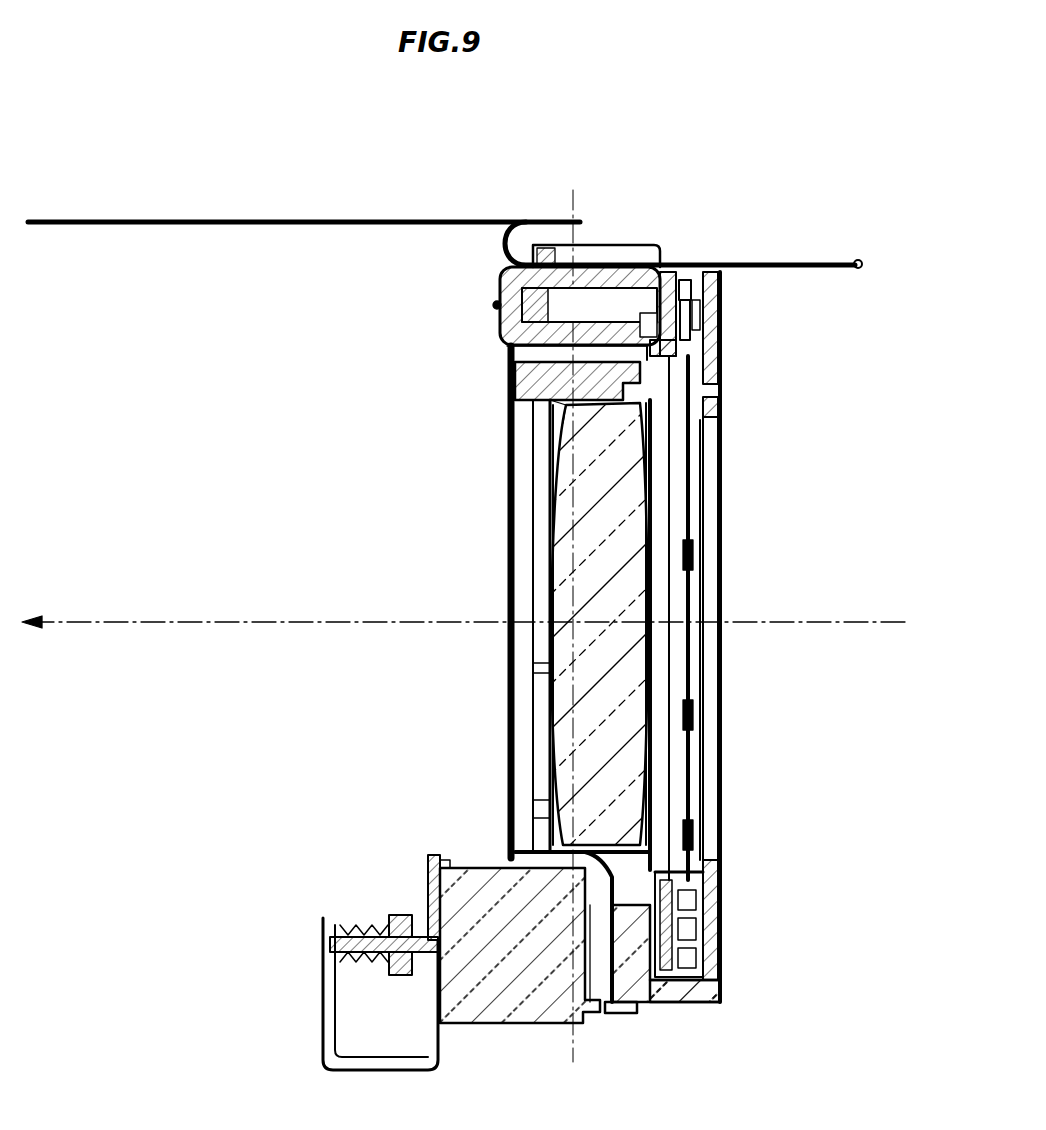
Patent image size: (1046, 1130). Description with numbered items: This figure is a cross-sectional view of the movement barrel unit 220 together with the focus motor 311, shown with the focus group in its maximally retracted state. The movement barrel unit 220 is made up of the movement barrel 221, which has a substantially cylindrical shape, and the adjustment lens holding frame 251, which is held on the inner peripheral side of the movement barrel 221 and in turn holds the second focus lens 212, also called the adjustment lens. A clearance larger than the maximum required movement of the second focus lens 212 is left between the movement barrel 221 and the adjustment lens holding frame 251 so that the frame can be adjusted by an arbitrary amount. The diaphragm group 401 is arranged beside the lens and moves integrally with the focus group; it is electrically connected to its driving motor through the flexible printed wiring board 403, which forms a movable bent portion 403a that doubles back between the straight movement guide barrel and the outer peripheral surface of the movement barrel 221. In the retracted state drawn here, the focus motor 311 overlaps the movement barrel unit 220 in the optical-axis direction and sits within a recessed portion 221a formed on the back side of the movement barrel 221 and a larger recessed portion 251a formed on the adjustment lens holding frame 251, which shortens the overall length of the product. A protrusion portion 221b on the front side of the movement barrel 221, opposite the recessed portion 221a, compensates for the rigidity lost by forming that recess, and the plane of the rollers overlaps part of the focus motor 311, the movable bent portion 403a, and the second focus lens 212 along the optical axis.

The movement barrel unit 220 is at (622, 156).
The flexible printed wiring board 403 is at (243, 220).
The movable bent portion 403a is at (512, 237).
The movement barrel 221 is at (510, 300).
The adjustment lens holding frame 251 is at (540, 382).
The diaphragm group 401 is at (712, 356).
The second focus lens 212 is at (625, 494).
The recessed portion 251a is at (722, 878).
The protrusion portion 221b is at (722, 998).
The recessed portion 221a is at (605, 1012).
The focus motor 311 is at (483, 905).